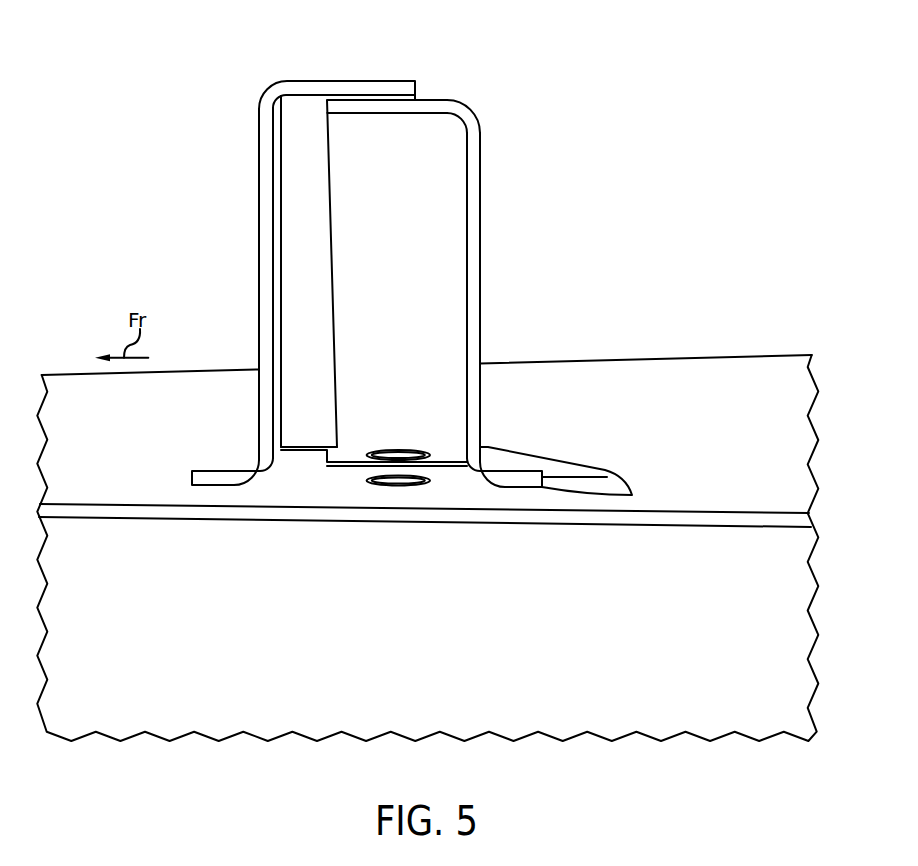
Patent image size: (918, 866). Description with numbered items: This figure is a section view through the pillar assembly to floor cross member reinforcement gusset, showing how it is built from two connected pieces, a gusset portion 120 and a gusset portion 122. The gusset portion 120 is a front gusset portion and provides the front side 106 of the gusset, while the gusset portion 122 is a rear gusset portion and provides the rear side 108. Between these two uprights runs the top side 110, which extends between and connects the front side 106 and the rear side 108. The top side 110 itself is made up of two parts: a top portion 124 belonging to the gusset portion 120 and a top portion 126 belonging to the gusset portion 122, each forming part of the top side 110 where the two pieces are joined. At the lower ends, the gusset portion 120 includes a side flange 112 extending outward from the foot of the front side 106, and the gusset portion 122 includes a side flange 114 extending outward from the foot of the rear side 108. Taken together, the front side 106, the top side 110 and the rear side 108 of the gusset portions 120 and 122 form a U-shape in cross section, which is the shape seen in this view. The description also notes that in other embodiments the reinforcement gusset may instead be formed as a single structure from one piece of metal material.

The front side 106 is at (258, 256).
The rear side 108 is at (482, 268).
The top side 110 is at (400, 80).
The side flange 112 is at (215, 470).
The side flange 114 is at (565, 462).
The gusset portion 120 is at (186, 104).
The gusset portion 122 is at (530, 109).
The top portion 124 is at (340, 81).
The top portion 126 is at (443, 100).